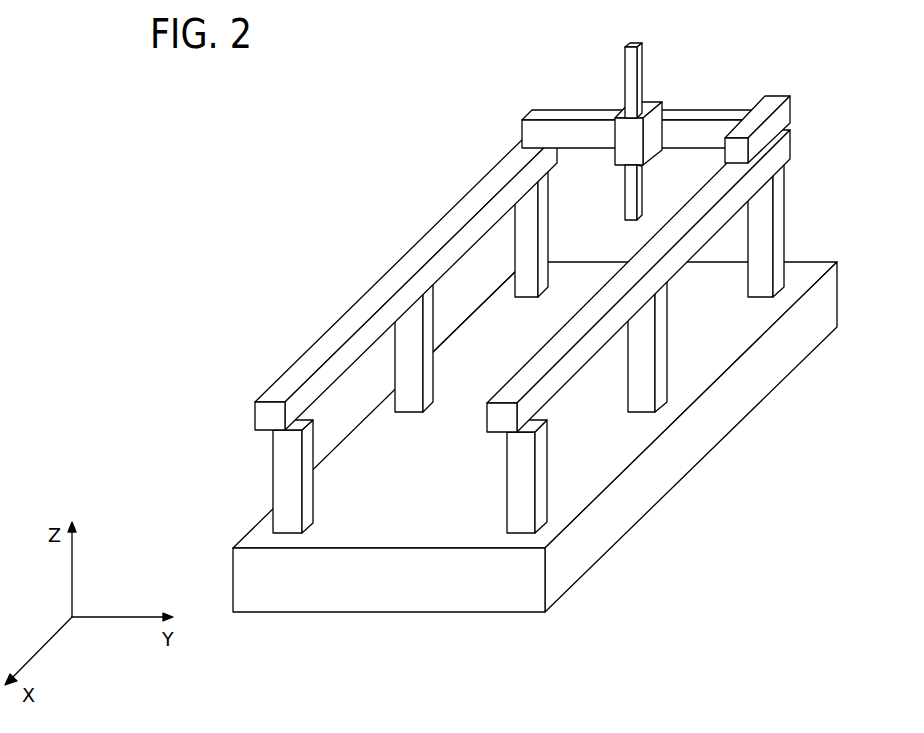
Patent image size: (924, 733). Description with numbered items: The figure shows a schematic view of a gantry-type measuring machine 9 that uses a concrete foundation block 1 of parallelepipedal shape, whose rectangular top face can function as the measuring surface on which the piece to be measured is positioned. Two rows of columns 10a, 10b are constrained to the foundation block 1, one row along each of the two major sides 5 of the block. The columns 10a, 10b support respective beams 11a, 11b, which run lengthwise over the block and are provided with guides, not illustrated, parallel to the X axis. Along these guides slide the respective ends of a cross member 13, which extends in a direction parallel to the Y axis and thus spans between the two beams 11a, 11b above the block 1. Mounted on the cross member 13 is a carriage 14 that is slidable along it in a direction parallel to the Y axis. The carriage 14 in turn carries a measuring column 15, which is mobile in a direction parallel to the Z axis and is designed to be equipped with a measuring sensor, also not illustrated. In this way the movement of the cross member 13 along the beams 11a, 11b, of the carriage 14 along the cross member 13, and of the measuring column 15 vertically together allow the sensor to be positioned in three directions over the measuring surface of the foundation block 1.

The block 1 is at (353, 595).
The major sides 5 is at (474, 310).
The machine 9 is at (318, 186).
The columns 10a is at (760, 243).
The columns 10b is at (527, 215).
The beam 11a is at (355, 312).
The beam 11b is at (715, 193).
The cross member 13 is at (585, 127).
The carriage 14 is at (632, 137).
The measuring column 15 is at (627, 193).